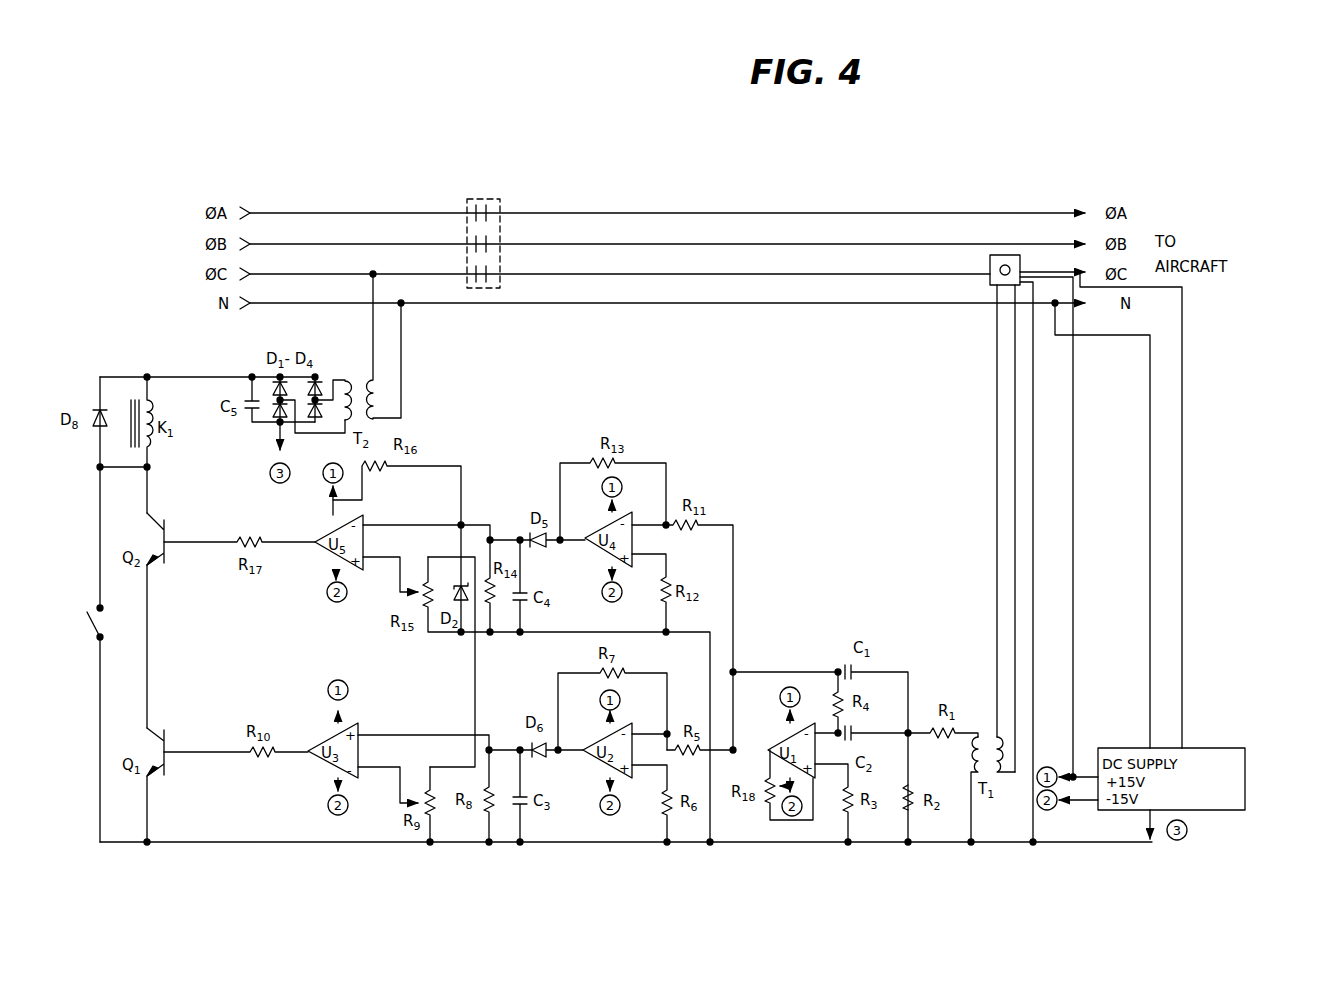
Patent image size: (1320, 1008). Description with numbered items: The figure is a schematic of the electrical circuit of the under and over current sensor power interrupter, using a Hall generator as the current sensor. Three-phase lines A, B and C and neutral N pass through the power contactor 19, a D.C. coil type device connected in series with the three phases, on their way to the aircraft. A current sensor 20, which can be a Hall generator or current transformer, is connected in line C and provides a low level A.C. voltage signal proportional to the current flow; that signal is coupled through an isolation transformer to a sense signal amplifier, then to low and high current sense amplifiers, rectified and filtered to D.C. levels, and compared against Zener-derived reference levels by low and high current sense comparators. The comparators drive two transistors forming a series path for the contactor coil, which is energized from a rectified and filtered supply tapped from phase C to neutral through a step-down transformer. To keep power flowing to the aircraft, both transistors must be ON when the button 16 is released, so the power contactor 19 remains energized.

The button 16 is at (92, 631).
The power contactor 19 is at (486, 199).
The current sensor 20 is at (990, 262).